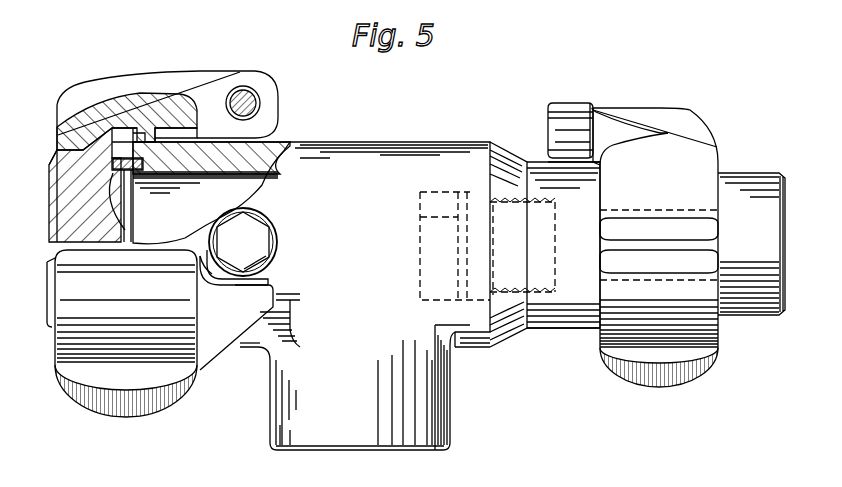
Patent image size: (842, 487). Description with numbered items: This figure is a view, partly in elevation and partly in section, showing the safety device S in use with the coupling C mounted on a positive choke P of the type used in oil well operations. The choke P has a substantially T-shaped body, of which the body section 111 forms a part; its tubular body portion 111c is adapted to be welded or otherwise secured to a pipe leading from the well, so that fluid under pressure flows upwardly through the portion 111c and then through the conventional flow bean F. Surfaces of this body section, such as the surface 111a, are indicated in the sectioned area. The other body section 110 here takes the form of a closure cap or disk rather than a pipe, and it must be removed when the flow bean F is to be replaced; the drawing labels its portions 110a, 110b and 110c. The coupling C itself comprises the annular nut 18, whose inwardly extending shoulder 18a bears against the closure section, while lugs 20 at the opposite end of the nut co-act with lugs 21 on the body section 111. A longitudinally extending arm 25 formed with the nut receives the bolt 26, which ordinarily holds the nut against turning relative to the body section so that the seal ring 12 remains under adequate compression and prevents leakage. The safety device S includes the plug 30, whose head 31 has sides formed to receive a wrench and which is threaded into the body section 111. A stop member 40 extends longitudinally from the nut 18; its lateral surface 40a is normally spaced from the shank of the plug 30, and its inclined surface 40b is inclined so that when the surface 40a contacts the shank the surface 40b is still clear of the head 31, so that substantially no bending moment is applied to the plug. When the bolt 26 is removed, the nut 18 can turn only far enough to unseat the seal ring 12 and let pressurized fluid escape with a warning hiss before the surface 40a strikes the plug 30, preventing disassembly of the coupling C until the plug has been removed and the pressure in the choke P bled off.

The annular nut 18 is at (114, 85).
The inwardly extending shoulder 18a is at (64, 115).
The lugs 20 is at (188, 128).
The lugs 21 is at (146, 133).
The longitudinally extending arm 25 is at (251, 78).
The bolt 26 is at (258, 95).
The body section 110 is at (53, 195).
The block upper surface 110a is at (112, 147).
The block corner 110b is at (58, 140).
The stem 110c is at (125, 215).
The seal ring 12 is at (144, 185).
The body section 111 is at (284, 166).
The body surface 111a is at (158, 180).
The tubular body portion 111c is at (448, 438).
The positive choke P is at (351, 140).
The plug 30 is at (278, 243).
The head 31 is at (258, 228).
The safety device S is at (278, 270).
The stop member 40 is at (216, 352).
The lateral surface 40a is at (225, 281).
The inclined surface 40b is at (263, 284).
The coupling C is at (134, 420).
The flow bean F is at (533, 327).